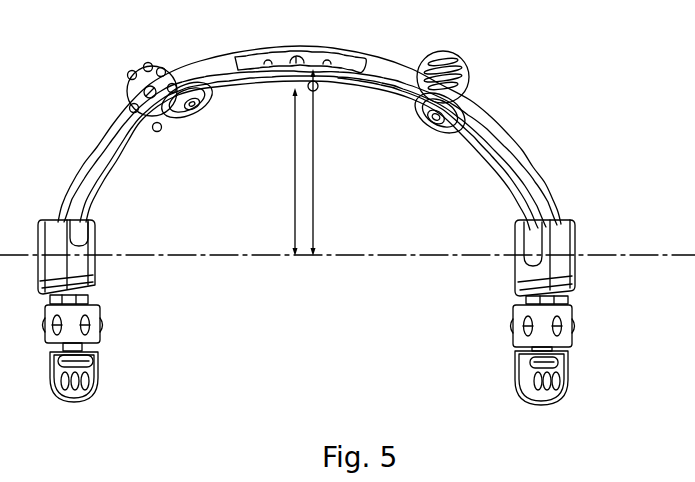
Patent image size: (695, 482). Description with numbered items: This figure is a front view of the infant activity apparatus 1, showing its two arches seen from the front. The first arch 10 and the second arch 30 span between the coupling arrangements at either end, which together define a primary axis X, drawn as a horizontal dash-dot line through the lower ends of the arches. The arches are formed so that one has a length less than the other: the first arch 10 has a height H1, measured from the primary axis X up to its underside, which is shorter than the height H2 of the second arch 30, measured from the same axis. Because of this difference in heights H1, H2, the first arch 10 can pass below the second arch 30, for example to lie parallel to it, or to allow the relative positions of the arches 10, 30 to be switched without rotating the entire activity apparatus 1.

The infant activity apparatus 1 is at (547, 106).
The first arch 10 is at (384, 87).
The second arch 30 is at (388, 68).
The height of the first arch H1 is at (295, 168).
The height of the second arch H2 is at (315, 203).
The primary axis X is at (288, 257).